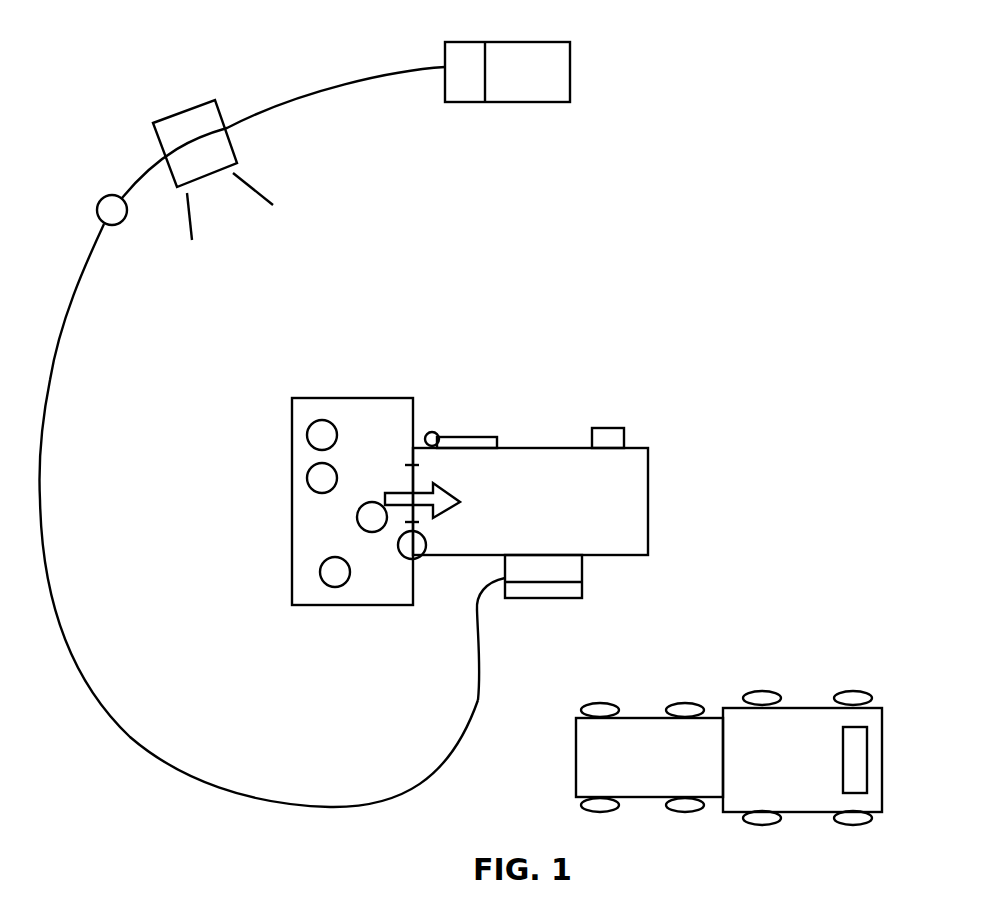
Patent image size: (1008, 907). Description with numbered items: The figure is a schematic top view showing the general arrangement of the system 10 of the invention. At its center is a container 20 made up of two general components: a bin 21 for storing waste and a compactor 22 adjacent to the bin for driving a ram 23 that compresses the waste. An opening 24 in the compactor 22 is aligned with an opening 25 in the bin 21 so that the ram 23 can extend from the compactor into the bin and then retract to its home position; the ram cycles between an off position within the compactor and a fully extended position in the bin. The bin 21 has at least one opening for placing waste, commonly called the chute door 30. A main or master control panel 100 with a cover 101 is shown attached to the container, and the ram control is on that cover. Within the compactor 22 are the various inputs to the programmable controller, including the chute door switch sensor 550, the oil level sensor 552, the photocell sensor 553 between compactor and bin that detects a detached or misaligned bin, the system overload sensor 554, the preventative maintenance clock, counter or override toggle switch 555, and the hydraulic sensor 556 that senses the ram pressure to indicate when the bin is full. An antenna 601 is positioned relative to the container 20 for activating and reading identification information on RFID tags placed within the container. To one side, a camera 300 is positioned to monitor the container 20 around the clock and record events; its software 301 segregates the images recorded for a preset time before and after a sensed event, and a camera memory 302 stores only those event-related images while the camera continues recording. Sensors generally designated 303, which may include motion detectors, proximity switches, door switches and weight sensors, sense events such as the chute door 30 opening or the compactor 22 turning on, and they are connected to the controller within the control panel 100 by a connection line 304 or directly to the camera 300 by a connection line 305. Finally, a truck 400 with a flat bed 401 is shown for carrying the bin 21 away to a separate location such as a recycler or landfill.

The system 10 is at (686, 199).
The container 20 is at (641, 372).
The bin 21 is at (631, 502).
The compactor 22 is at (292, 568).
The ram 23 is at (448, 509).
The opening 24 is at (417, 481).
The opening 25 is at (405, 478).
The chute door 30 is at (473, 443).
The control panel 100 is at (527, 570).
The cover 101 is at (558, 590).
The camera 300 is at (191, 123).
The software 301 is at (465, 53).
The camera memory 302 is at (528, 90).
The sensors 303 is at (129, 216).
The connection line 304 is at (52, 578).
The connection line 305 is at (120, 175).
The truck 400 is at (807, 707).
The flat bed 401 is at (647, 783).
The chute door switch sensor 550 is at (428, 426).
The oil level sensor 552 is at (337, 594).
The photocell sensor 553 is at (397, 552).
The system overload sensor 554 is at (308, 464).
The maintenance clock/counter or override toggle switch 555 is at (308, 424).
The hydraulic sensor 556 is at (355, 513).
The antenna 601 is at (610, 438).